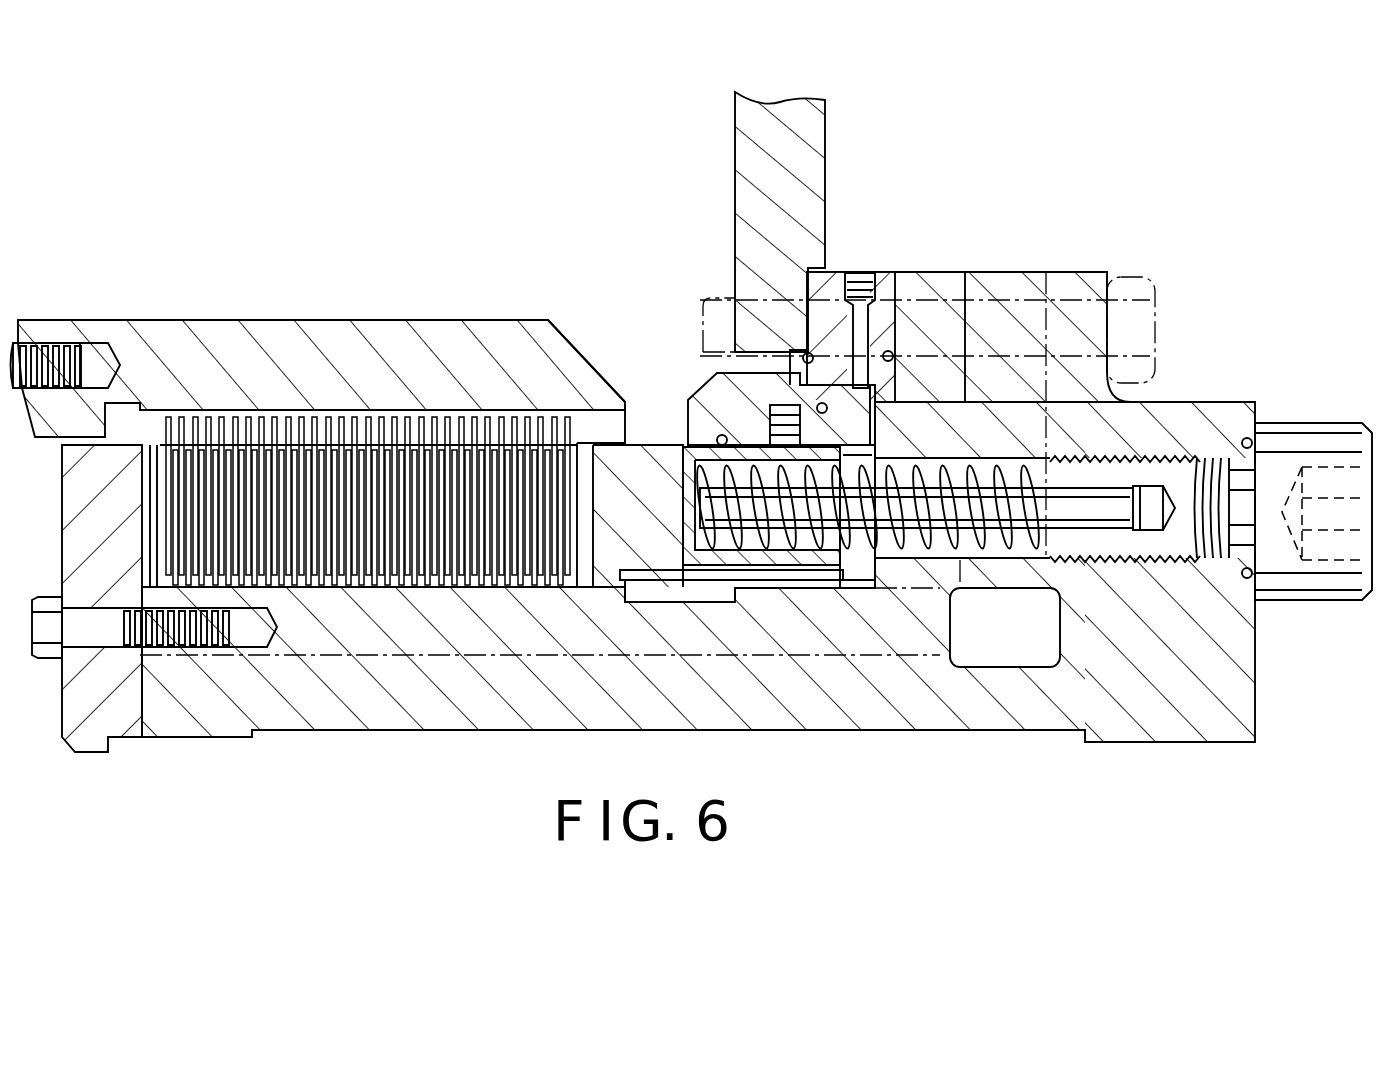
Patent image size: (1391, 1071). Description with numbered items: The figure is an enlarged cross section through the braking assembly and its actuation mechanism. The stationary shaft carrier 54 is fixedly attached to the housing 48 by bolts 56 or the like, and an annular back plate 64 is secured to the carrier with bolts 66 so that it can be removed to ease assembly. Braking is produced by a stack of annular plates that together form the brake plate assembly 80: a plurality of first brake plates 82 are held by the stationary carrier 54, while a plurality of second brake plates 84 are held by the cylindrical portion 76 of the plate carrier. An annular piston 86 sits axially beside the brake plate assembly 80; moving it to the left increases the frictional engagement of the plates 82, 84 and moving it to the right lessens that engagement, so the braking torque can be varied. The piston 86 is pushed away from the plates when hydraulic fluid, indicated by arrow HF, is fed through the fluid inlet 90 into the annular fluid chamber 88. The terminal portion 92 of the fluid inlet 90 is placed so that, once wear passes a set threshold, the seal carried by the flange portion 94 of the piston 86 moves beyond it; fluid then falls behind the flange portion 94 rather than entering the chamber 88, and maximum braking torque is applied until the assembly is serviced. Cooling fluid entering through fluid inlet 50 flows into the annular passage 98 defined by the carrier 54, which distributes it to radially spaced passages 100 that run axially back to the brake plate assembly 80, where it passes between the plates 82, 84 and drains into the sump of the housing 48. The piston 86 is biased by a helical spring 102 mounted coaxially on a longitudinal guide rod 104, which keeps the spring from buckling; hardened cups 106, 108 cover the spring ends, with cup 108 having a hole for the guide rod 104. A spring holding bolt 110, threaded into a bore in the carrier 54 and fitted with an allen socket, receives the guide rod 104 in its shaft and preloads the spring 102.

The housing 48 is at (735, 168).
The hydraulic fluid arrow HF is at (858, 256).
The terminal portion of fluid inlet 92 is at (742, 342).
The fluid inlet 90 is at (868, 332).
The fluid inlet 50 is at (1058, 322).
The bolts 56 is at (1177, 298).
The cylindrical portion of plate carrier 76 is at (348, 320).
The second brake plates 84 is at (522, 418).
The annular piston 86 is at (658, 443).
The annular fluid chamber 88 is at (778, 420).
The flange portion of annular piston 94 is at (870, 447).
The cup 108 is at (1000, 470).
The guide rod 104 is at (1100, 462).
The spring holding bolt 110 is at (1293, 423).
The annular back plate 64 is at (62, 562).
The bolts 66 is at (48, 658).
The brake plate assembly 80 is at (372, 597).
The first brake plates 82 is at (543, 587).
The cup 106 is at (770, 565).
The helical spring 102 is at (850, 570).
The radially spaced passages 100 is at (888, 655).
The stationary shaft carrier 54 is at (1132, 742).
The annular passage 98 is at (1005, 627).